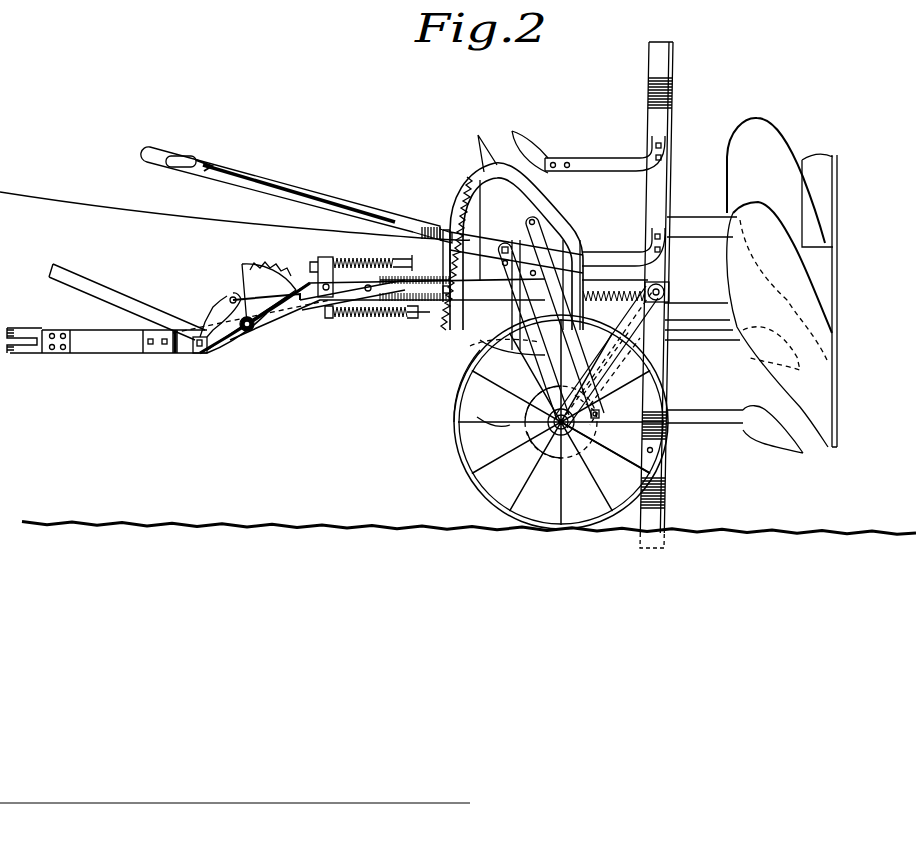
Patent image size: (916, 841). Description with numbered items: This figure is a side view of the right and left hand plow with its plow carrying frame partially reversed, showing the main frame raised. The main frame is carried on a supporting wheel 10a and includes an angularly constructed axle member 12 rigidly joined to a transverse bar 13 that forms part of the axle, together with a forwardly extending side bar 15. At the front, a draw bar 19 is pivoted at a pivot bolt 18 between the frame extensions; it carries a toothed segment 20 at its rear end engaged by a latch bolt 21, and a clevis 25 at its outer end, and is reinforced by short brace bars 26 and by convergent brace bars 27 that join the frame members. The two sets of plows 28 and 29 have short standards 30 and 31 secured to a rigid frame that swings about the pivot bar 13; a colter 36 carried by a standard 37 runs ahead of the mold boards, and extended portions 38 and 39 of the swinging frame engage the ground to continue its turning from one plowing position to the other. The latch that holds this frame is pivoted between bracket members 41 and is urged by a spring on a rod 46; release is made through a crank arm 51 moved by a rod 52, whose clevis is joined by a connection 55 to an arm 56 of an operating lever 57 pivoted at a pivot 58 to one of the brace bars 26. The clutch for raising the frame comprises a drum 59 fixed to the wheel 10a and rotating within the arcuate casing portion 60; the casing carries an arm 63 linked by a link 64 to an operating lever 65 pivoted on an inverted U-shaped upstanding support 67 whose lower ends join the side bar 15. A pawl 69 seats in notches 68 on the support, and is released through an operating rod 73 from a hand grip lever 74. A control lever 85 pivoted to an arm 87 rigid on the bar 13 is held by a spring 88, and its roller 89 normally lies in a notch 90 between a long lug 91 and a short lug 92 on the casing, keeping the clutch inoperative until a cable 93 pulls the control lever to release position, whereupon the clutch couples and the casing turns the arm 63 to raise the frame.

The wheel 10a is at (456, 432).
The axle member 12 is at (640, 336).
The transverse bar 13 is at (672, 292).
The side bar 15 is at (475, 291).
The pivot bolt 18 is at (262, 322).
The draw bar 19 is at (128, 350).
The toothed segment 20 is at (268, 272).
The latch bolt 21 is at (297, 280).
The clevis 25 is at (24, 350).
The brace bar 26 is at (230, 338).
The convergent brace bar 27 is at (315, 317).
The plow 28 is at (735, 215).
The plow 29 is at (478, 150).
The plow standard 30 is at (712, 240).
The plow standard 31 is at (598, 256).
The colter 36 is at (790, 443).
The colter standard 37 is at (590, 160).
The frame extension 38 is at (668, 530).
The frame extension 39 is at (675, 60).
The bracket member 41 is at (402, 258).
The rod 46 is at (326, 258).
The crank arm 51 is at (443, 303).
The rod 52 is at (392, 318).
The connection 55 is at (246, 302).
The arm 56 is at (215, 302).
The operating lever 57 is at (120, 290).
The lever pivot 58 is at (204, 353).
The drum 59 is at (572, 462).
The arcuate casing portion 60 is at (590, 443).
The arm 63 is at (475, 378).
The link 64 is at (472, 345).
The operating lever 65 is at (352, 200).
The upstanding support 67 is at (550, 204).
The notches 68 is at (468, 186).
The pawl 69 is at (432, 226).
The operating rod 73 is at (295, 185).
The hand grip lever 74 is at (185, 155).
The control lever 85 is at (560, 235).
The arm 87 is at (650, 340).
The spring 88 is at (598, 290).
The roller 89 is at (603, 411).
The notch 90 is at (530, 430).
The long lug 91 is at (600, 428).
The short lug 92 is at (533, 447).
The cable 93 is at (150, 222).